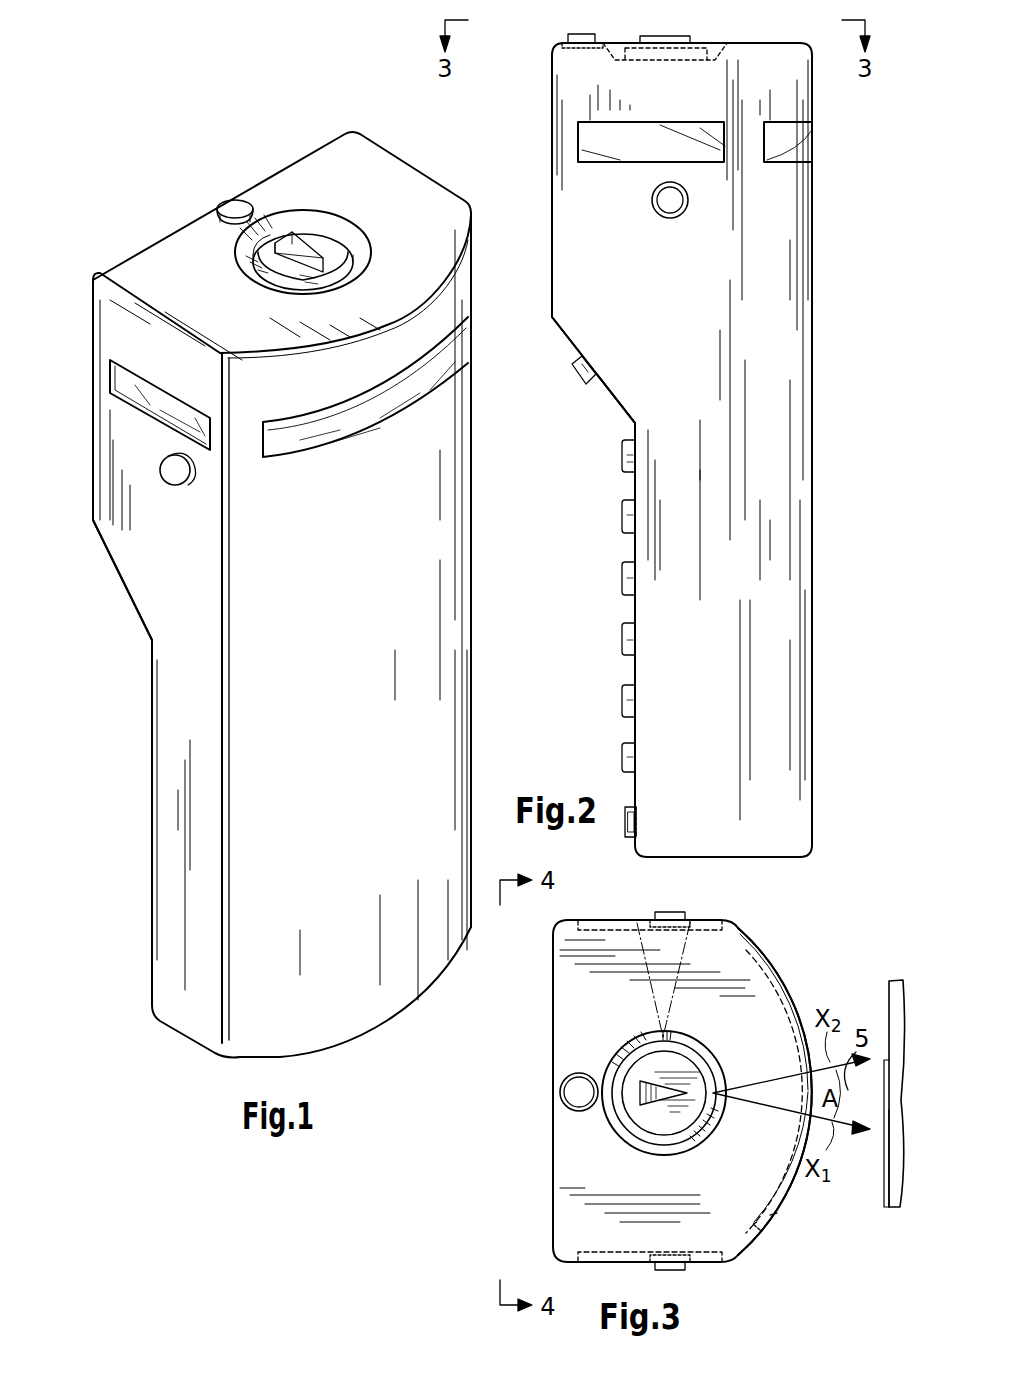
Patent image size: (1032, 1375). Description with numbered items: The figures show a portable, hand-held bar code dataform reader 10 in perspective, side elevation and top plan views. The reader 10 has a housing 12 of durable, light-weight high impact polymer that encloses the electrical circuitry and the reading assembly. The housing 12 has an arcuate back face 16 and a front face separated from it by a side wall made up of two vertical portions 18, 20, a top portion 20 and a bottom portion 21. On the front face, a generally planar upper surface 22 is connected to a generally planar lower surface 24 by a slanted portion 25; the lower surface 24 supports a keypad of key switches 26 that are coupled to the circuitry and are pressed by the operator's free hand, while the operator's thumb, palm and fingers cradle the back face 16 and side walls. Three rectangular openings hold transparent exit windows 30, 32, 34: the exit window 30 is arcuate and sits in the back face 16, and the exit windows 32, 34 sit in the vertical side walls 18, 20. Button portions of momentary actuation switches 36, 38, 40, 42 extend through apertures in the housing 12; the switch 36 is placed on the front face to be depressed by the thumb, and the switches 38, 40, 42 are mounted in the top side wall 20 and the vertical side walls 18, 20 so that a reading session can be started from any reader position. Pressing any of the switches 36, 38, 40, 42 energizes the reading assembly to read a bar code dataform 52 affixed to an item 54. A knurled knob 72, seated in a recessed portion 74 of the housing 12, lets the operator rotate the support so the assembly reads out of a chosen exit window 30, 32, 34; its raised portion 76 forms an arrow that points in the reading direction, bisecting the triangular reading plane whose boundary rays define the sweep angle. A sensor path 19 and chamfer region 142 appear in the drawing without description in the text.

In FIG. 1, the bar code dataform reader 10 is at (96, 740).
In FIG. 1, the housing 12 is at (124, 598).
In FIG. 2, the housing 12 is at (826, 320).
In FIG. 1, the arcuate back face 16 is at (418, 606).
In FIG. 3, the arcuate back face 16 is at (776, 972).
In FIG. 1, the vertical side wall portion 18 is at (168, 745).
In FIG. 2, the vertical side wall portion 18 is at (655, 364).
In FIG. 3, the vertical side wall portion 18 is at (625, 1262).
In FIG. 3, the sensor path 19 is at (642, 924).
In FIG. 1, the top portion of side wall 20 is at (318, 186).
In FIG. 3, the top portion of side wall 20 is at (638, 1018).
In FIG. 1, the bottom portion of side wall 21 is at (313, 1050).
In FIG. 2, the bottom portion of side wall 21 is at (770, 858).
In FIG. 2, the upper surface 22 is at (552, 150).
In FIG. 3, the upper surface 22 is at (553, 1036).
In FIG. 2, the lower surface 24 is at (635, 607).
In FIG. 2, the slanted portion 25 is at (614, 402).
In FIG. 2, the key switches 26 is at (623, 455).
In FIG. 1, the exit window 30 is at (400, 392).
In FIG. 2, the exit window 30 is at (800, 150).
In FIG. 3, the exit window 30 is at (767, 1224).
In FIG. 1, the exit window 32 is at (155, 398).
In FIG. 2, the exit window 32 is at (690, 140).
In FIG. 3, the exit window 32 is at (612, 1256).
In FIG. 3, the exit window 34 is at (606, 930).
In FIG. 2, the actuation switch 36 is at (583, 378).
In FIG. 1, the actuation switch 38 is at (235, 205).
In FIG. 2, the actuation switch 38 is at (575, 40).
In FIG. 3, the actuation switch 38 is at (572, 1088).
In FIG. 1, the actuation switch 40 is at (172, 470).
In FIG. 2, the actuation switch 40 is at (668, 200).
In FIG. 3, the actuation switch 40 is at (672, 1272).
In FIG. 3, the actuation switch 42 is at (672, 912).
In FIG. 3, the bar code dataform 52 is at (889, 1120).
In FIG. 3, the item 54 is at (896, 1005).
In FIG. 3, the knurled knob 72 is at (648, 1075).
In FIG. 3, the recessed portion 74 is at (665, 1150).
In FIG. 2, the raised portion 76 is at (665, 35).
In FIG. 3, the raised portion 76 is at (636, 1125).
In FIG. 2, the chamfer region 142 is at (558, 343).